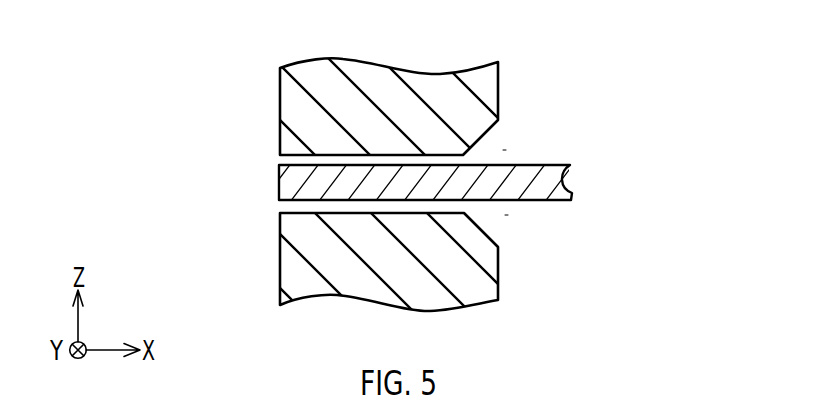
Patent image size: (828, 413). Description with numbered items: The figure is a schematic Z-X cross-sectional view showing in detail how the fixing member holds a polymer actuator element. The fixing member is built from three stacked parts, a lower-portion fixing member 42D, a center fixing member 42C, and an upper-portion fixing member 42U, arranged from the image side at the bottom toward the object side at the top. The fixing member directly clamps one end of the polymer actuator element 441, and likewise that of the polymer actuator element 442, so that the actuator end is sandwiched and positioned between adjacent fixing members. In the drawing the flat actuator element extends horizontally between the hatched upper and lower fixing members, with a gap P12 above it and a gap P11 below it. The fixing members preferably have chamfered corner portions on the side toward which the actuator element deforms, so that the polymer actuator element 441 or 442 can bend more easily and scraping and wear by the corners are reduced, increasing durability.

The center fixing member 42C is at (327, 175).
The upper-portion fixing member 42U is at (282, 113).
The lower-portion fixing member 42D is at (282, 257).
The polymer actuator element 441 is at (482, 182).
The polymer actuator element 442 is at (572, 177).
The upper gap position P12 is at (512, 151).
The lower gap position P11 is at (515, 222).